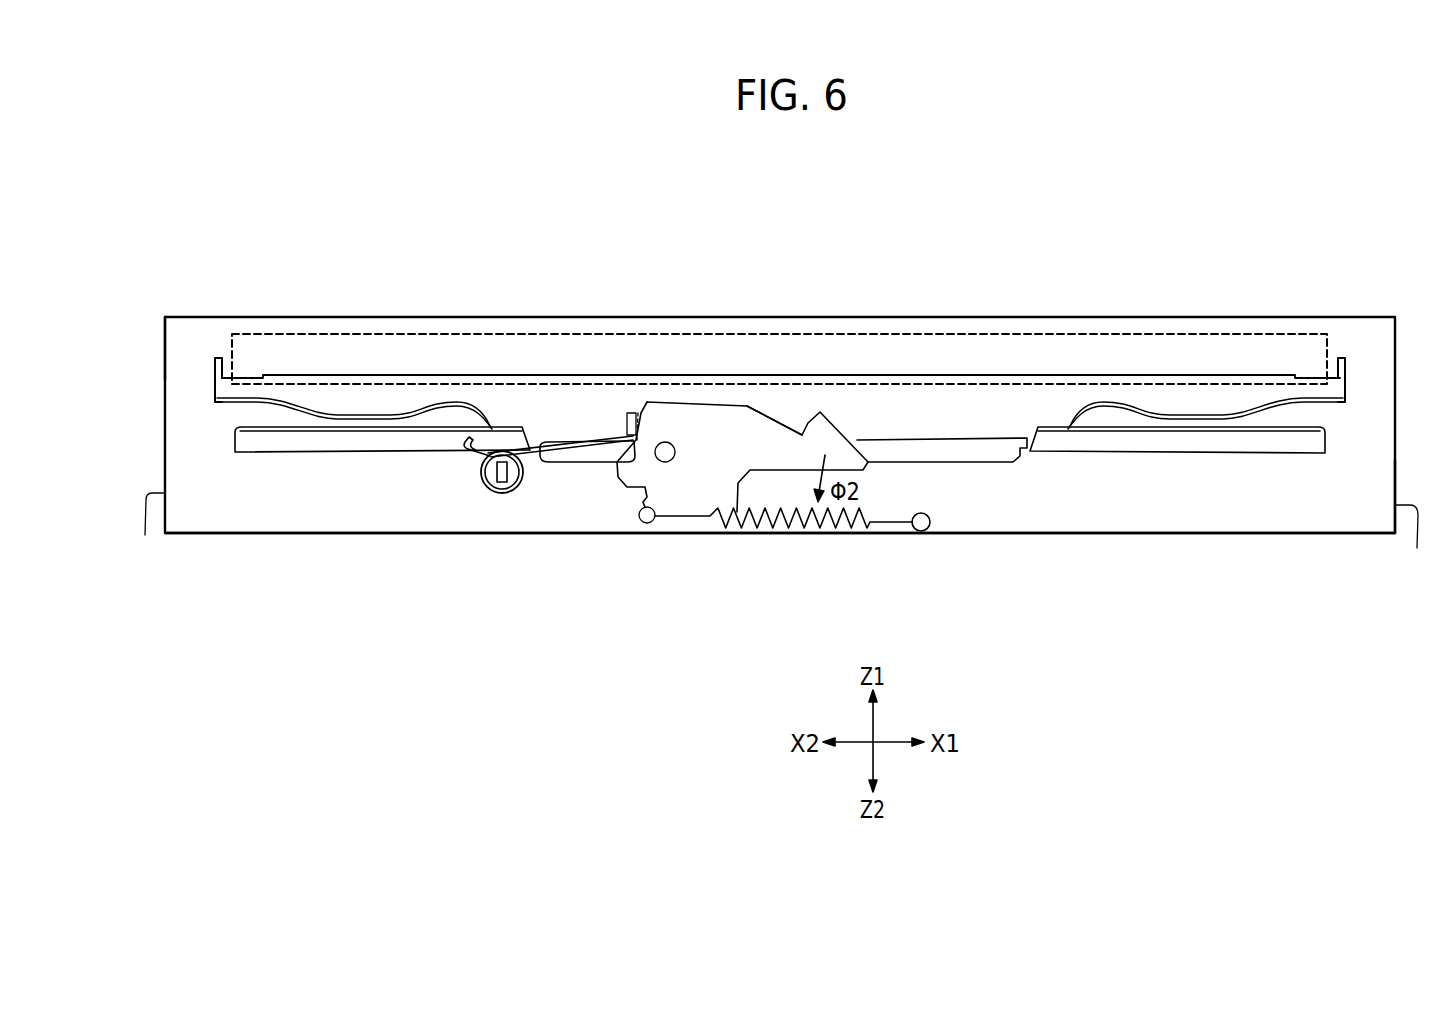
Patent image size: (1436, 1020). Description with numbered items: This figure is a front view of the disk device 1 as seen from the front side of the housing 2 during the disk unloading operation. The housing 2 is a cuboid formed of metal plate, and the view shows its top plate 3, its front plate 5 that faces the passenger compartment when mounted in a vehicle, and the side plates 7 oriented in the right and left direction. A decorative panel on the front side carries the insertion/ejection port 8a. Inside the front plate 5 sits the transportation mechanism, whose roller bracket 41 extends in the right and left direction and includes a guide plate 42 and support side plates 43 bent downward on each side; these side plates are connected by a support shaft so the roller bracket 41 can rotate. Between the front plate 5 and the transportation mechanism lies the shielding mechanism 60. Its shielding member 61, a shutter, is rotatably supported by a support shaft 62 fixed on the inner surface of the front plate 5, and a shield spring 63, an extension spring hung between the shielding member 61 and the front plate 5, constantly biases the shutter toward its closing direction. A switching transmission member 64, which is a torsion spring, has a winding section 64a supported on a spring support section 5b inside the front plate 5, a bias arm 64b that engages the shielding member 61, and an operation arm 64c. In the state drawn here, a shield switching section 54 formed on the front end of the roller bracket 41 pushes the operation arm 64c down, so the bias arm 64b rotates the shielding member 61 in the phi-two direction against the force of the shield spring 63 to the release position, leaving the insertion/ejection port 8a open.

The disk device 1 is at (1190, 276).
The housing 2 is at (1190, 542).
The top plate 3 is at (948, 317).
The front plate 5 is at (1302, 508).
The spring support section 5b is at (501, 483).
The side plates 7 is at (145, 535).
The insertion/ejection port 8a is at (1228, 333).
The roller bracket 41 is at (1006, 350).
The guide plate 42 is at (865, 375).
The support side plates 43 is at (218, 357).
The shield switching section 54 is at (302, 453).
The shielding mechanism 60 is at (705, 390).
The shielding member 61 is at (757, 430).
The support shaft 62 is at (663, 442).
The shield spring 63 is at (780, 530).
The switching transmission member 64 is at (515, 438).
The winding section 64a is at (484, 490).
The bias arm 64b is at (578, 437).
The operation arm 64c is at (432, 457).